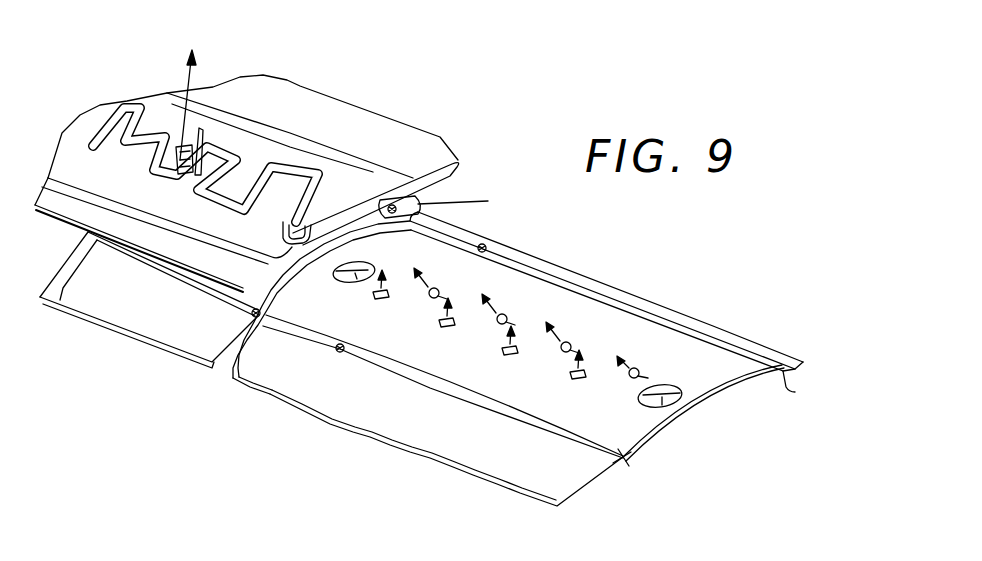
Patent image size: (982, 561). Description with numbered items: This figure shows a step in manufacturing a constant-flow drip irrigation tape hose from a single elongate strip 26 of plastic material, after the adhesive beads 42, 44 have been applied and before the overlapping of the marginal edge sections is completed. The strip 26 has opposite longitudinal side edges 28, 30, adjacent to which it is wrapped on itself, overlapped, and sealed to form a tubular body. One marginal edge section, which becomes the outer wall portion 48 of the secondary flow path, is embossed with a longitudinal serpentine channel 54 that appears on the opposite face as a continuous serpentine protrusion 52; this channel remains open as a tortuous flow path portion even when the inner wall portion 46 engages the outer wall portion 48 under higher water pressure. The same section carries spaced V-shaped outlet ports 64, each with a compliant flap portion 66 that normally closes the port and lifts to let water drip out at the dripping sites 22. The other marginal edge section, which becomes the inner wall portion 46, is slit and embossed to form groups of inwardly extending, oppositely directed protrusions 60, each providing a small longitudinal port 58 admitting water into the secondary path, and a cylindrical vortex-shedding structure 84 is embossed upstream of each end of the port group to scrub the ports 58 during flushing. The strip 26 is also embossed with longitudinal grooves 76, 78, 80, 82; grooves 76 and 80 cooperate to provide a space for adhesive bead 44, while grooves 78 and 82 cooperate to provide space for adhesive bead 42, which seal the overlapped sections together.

The dripping sites 22 is at (201, 118).
The elongate strip 26 is at (498, 489).
The longitudinal side edge 28 is at (713, 326).
The longitudinal side edge 30 is at (43, 300).
The longitudinal adhesive bead 42 is at (482, 244).
The longitudinal adhesive bead 44 is at (336, 349).
The inner wall portion 46 is at (665, 428).
The outer wall portion 48 is at (375, 160).
The serpentine protrusion 52 is at (327, 177).
The serpentine channel 54 is at (283, 237).
The ports 58 is at (443, 292).
The protrusions 60 is at (372, 293).
The V-shaped outlet ports 64 is at (176, 178).
The flap portion 66 is at (226, 164).
The longitudinal groove 76 is at (252, 311).
The longitudinal groove 78 is at (397, 189).
The longitudinal groove 80 is at (627, 468).
The longitudinal groove 82 is at (802, 389).
The vortex-shedding structure 84 is at (355, 261).